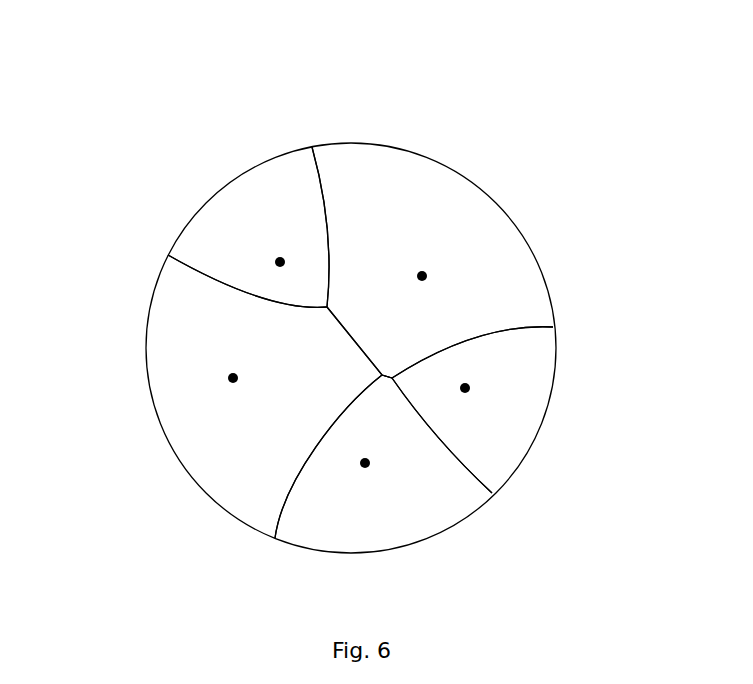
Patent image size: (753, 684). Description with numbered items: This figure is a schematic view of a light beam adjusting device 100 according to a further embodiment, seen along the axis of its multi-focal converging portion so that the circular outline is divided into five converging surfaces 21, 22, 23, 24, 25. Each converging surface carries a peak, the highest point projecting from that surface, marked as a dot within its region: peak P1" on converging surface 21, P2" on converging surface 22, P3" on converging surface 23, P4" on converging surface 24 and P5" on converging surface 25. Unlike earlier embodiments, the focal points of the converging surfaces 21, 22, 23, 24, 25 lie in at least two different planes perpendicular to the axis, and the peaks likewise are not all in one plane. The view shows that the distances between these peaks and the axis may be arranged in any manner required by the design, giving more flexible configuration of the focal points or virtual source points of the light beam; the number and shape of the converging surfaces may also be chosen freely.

The light beam adjusting device 100 is at (353, 67).
The converging surface 21 is at (458, 213).
The converging surface 22 is at (518, 417).
The converging surface 23 is at (393, 495).
The converging surface 24 is at (177, 383).
The converging surface 25 is at (227, 213).